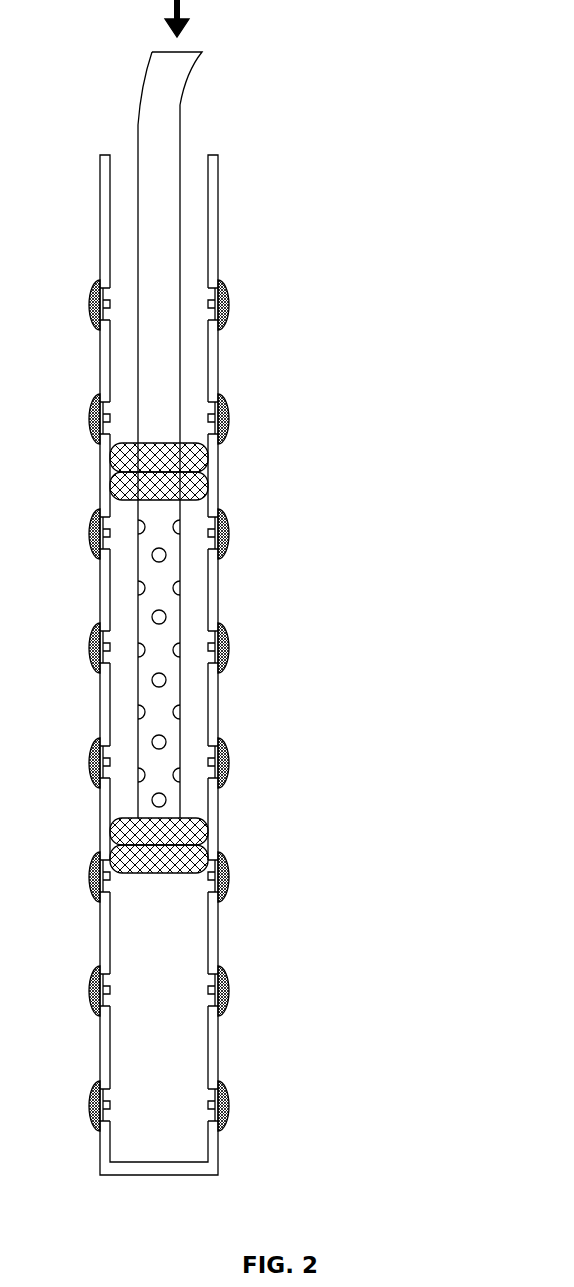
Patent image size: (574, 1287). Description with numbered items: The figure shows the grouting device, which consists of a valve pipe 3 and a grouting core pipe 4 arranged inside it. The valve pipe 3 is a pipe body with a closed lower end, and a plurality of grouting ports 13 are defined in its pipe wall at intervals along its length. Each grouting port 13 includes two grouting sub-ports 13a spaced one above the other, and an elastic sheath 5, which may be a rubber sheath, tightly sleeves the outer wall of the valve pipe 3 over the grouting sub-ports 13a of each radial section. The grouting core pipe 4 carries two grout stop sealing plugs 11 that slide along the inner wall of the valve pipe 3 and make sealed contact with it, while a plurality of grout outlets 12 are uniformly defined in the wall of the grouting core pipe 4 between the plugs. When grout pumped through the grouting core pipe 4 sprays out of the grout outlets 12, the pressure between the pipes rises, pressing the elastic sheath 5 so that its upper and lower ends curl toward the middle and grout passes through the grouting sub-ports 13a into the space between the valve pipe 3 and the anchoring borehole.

The valve pipe 3 is at (215, 382).
The grouting core pipe 4 is at (168, 630).
The elastic sheath 5 is at (229, 306).
The grout stop sealing plug 11 is at (207, 487).
The grout outlet 12 is at (166, 740).
The grouting port 13 is at (246, 1001).
The grouting sub-port 13a is at (227, 1011).